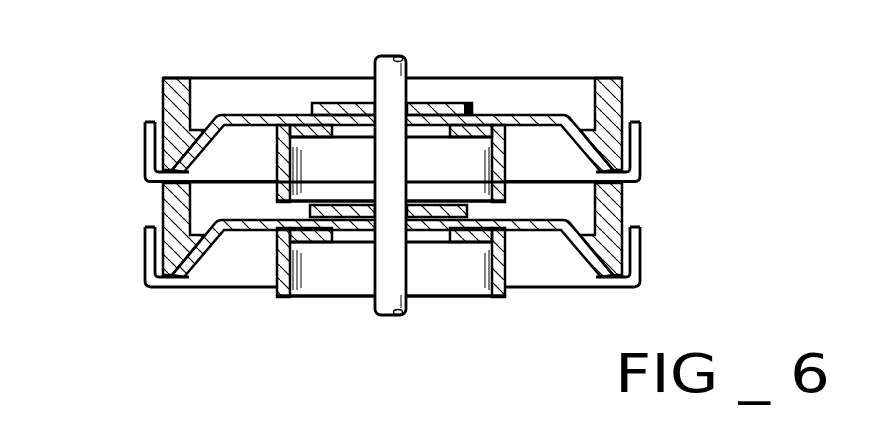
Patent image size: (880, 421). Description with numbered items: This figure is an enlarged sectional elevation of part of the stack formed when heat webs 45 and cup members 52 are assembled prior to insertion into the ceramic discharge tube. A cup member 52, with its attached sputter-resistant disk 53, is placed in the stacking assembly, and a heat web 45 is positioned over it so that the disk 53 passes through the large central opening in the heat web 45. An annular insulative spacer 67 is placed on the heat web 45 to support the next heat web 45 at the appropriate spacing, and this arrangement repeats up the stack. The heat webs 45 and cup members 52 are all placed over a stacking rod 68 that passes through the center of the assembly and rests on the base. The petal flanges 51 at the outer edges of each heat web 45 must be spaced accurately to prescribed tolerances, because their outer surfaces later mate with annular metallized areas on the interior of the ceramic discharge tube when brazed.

The heat web 45 is at (537, 113).
The petal flanges 51 is at (641, 149).
The cup member 52 is at (506, 177).
The sputter-resistant disk 53 is at (435, 103).
The annular insulative spacer 67 is at (163, 112).
The stacking rod 68 is at (374, 63).